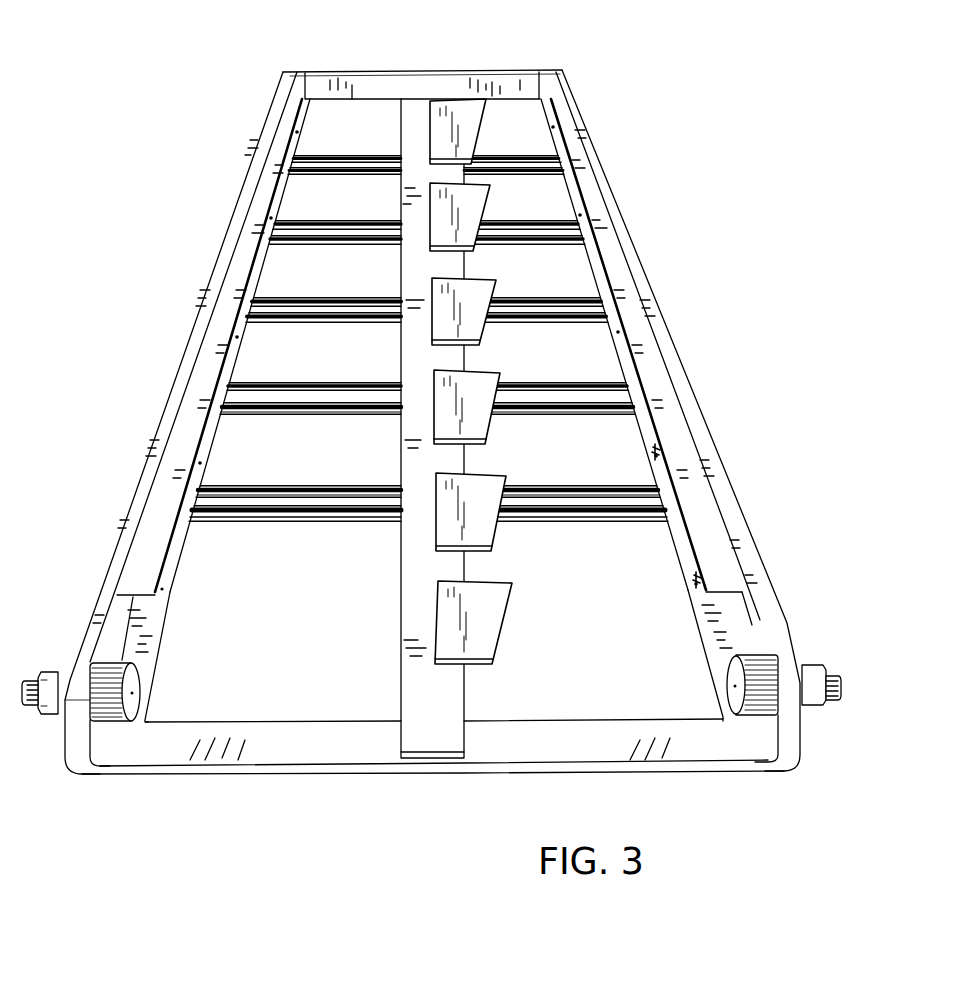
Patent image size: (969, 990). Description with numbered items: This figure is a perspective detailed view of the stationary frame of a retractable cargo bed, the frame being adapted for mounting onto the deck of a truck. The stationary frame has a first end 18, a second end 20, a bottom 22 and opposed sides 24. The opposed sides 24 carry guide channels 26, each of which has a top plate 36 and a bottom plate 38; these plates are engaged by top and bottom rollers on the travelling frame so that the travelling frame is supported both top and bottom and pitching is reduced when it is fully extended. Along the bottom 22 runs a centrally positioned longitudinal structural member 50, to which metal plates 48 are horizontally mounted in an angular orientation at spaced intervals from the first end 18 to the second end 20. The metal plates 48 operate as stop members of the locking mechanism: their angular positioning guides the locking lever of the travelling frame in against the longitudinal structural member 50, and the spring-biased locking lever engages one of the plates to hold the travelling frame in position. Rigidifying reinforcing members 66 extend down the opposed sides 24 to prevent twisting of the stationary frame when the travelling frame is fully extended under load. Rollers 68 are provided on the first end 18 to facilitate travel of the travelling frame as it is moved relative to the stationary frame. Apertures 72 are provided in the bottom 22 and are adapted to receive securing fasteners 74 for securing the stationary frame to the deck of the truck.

The first end 18 is at (468, 775).
The second end 20 is at (393, 72).
The bottom 22 is at (300, 777).
The opposed sides 24 is at (138, 497).
The guide channels 26 is at (760, 598).
The top plate 36 is at (207, 372).
The bottom plate 38 is at (155, 613).
The metal plates 48 is at (481, 419).
The centrally positioned longitudinal structural member 50 is at (407, 583).
The rigidifying reinforcing members 66 is at (327, 404).
The rollers 68 is at (117, 722).
The apertures 72 is at (618, 332).
The securing fasteners 74 is at (655, 447).